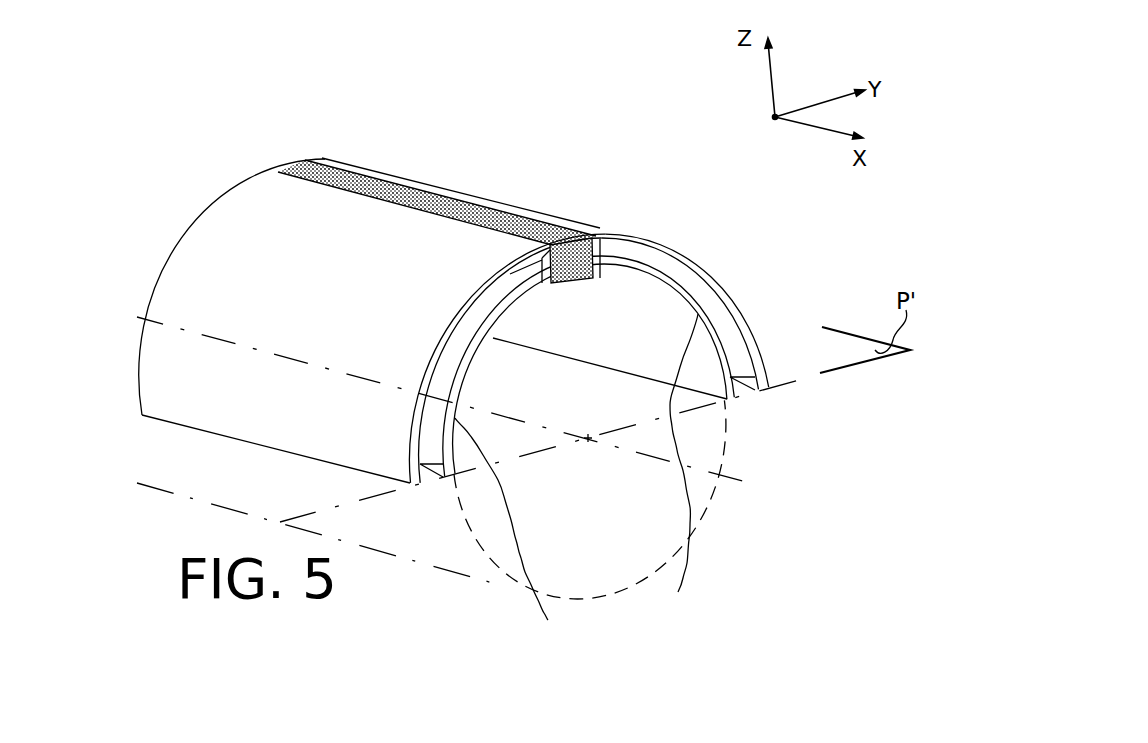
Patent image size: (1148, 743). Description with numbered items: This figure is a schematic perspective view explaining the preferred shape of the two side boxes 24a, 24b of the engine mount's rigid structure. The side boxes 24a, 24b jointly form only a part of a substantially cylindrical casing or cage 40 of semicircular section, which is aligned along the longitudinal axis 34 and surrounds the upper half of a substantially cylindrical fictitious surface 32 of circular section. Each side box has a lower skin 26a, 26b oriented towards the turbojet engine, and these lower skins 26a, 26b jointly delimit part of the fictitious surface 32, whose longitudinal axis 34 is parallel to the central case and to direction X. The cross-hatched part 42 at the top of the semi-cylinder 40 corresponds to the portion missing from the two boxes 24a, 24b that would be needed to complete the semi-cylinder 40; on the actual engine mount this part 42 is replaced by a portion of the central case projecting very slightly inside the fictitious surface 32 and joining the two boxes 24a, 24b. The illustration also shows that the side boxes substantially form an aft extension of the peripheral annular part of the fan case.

The side box 24a is at (197, 262).
The side box 24b is at (658, 245).
The lower skin 26a is at (515, 532).
The lower skin 26b is at (682, 466).
The fictitious surface 32 is at (703, 520).
The longitudinal axis 34 is at (737, 478).
The cylindrical casing 40 is at (433, 306).
The missing part 42 is at (373, 178).